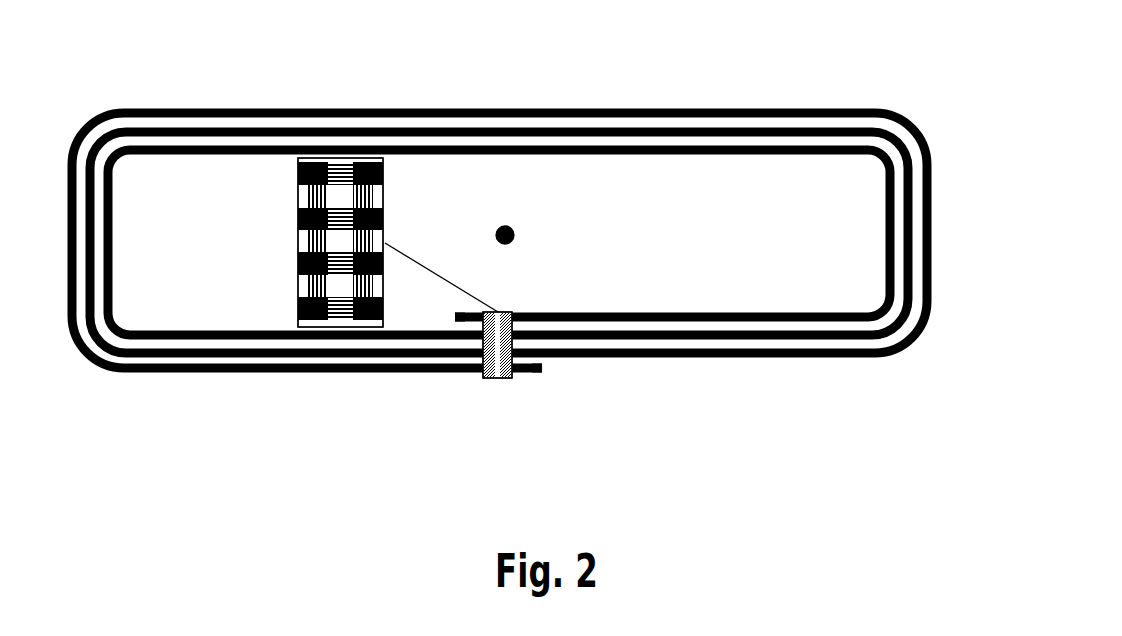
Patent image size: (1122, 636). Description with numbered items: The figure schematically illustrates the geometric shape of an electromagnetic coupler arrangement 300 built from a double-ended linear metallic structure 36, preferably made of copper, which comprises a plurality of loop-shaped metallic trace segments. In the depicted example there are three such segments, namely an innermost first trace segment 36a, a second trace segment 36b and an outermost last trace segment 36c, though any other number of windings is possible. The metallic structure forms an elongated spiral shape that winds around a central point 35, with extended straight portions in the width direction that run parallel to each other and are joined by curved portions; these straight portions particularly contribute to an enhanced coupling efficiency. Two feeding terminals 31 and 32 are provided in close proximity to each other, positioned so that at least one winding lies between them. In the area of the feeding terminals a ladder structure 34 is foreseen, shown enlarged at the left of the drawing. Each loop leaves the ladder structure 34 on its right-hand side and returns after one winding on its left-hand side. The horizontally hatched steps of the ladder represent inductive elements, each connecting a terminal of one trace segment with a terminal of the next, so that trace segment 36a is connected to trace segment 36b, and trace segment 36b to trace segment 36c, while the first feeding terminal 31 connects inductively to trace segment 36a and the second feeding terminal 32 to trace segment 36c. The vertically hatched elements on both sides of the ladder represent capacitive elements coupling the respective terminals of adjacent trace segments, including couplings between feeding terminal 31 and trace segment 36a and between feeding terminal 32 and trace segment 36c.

The electromagnetic coupler arrangement 300 is at (860, 40).
The first feeding terminal 31 is at (298, 178).
The second feeding terminal 32 is at (542, 366).
The ladder structure 34 is at (382, 202).
The central point 35 is at (512, 228).
The double-ended linear metallic structure 36 is at (822, 257).
The first loop-shaped metallic trace segment 36a is at (628, 313).
The second loop-shaped metallic trace segment 36b is at (738, 333).
The third loop-shaped metallic trace segment 36c is at (808, 350).